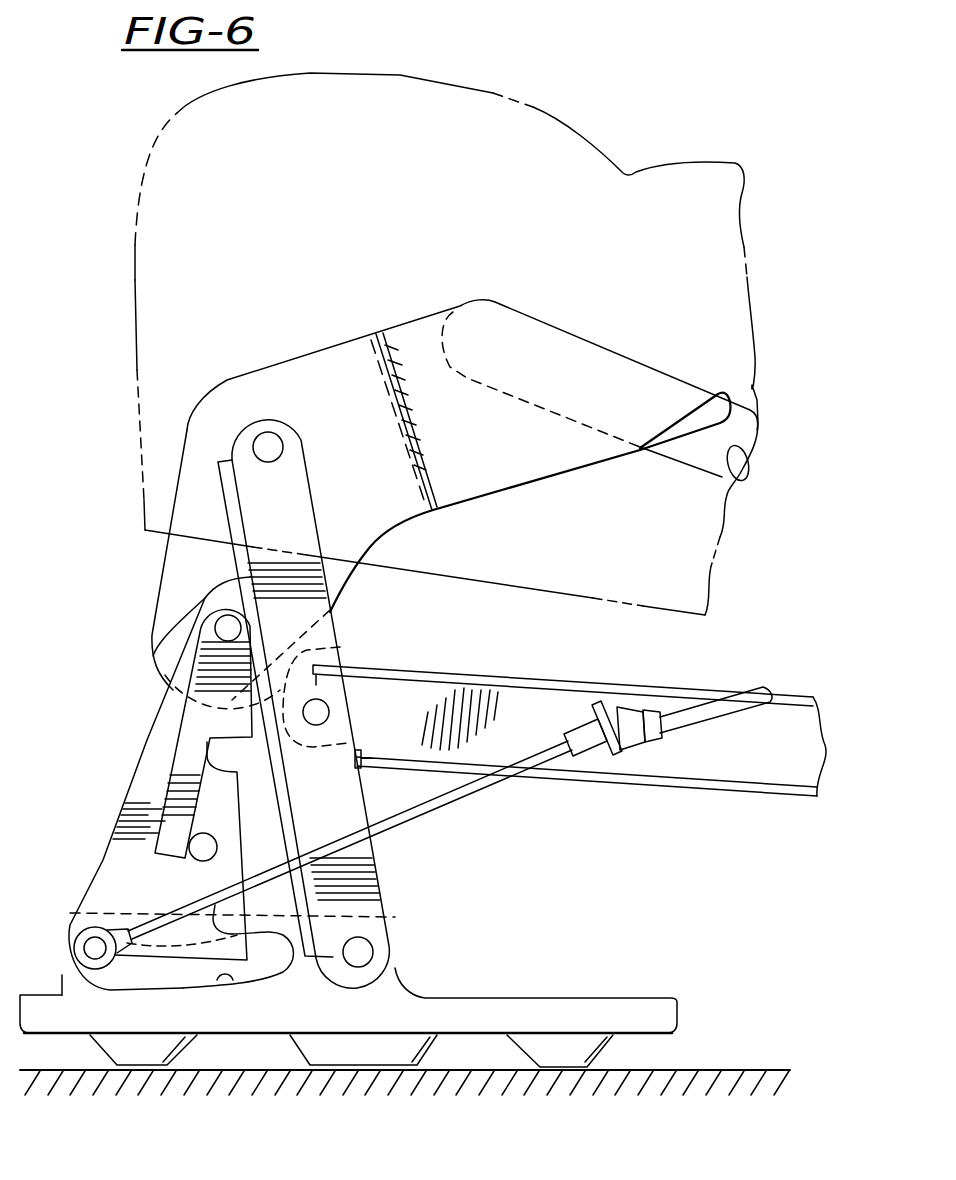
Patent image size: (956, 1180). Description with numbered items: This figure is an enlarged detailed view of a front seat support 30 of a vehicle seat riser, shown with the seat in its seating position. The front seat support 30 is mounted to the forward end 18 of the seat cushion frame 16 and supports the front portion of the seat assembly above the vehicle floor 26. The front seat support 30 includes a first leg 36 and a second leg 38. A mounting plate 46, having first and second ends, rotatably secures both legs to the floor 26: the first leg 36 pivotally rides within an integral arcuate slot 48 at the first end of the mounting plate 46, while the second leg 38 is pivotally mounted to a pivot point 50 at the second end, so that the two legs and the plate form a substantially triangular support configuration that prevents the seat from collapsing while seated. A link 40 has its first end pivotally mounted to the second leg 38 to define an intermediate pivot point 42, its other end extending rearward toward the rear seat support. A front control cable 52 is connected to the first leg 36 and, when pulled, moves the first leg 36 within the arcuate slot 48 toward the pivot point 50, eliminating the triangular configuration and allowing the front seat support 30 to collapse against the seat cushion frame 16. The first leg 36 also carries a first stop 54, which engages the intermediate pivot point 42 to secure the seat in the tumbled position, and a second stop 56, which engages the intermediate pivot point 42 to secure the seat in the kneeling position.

The seat cushion frame 16 is at (736, 438).
The forward end 18 is at (167, 570).
The floor 26 is at (722, 1070).
The front seat support 30 is at (178, 690).
The first leg 36 is at (108, 860).
The second leg 38 is at (340, 647).
The link 40 is at (710, 765).
The intermediate pivot point 42 is at (325, 712).
The mounting plate 46 is at (297, 1023).
The arcuate slot 48 is at (228, 980).
The pivot point 50 is at (362, 952).
The front control cable 52 is at (458, 788).
The first stop 54 is at (207, 753).
The second stop 56 is at (216, 913).